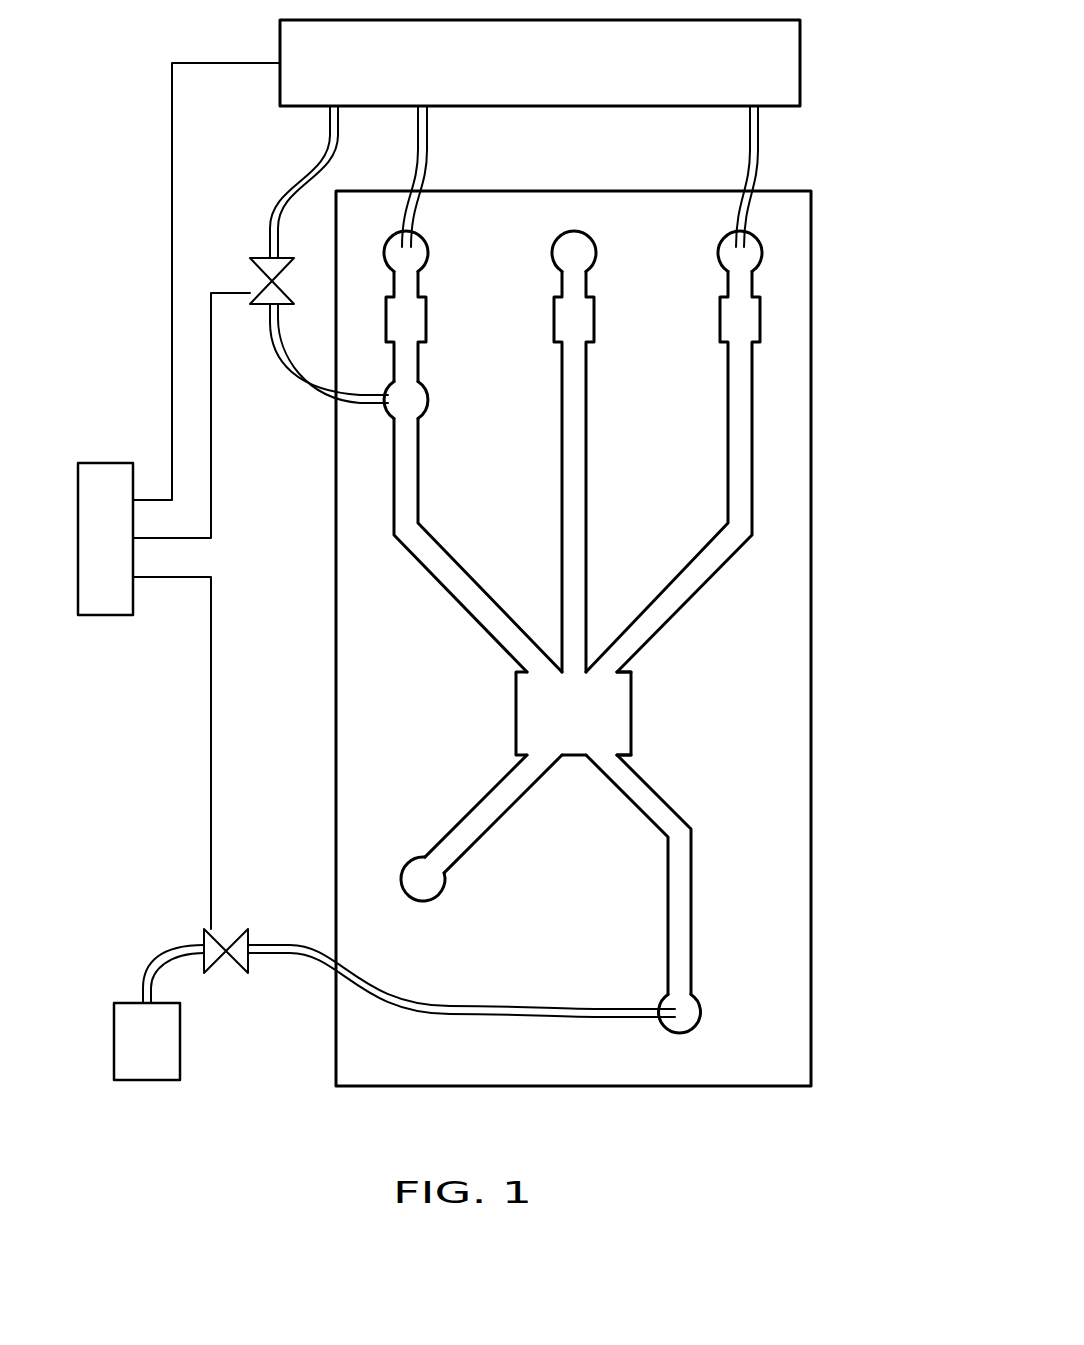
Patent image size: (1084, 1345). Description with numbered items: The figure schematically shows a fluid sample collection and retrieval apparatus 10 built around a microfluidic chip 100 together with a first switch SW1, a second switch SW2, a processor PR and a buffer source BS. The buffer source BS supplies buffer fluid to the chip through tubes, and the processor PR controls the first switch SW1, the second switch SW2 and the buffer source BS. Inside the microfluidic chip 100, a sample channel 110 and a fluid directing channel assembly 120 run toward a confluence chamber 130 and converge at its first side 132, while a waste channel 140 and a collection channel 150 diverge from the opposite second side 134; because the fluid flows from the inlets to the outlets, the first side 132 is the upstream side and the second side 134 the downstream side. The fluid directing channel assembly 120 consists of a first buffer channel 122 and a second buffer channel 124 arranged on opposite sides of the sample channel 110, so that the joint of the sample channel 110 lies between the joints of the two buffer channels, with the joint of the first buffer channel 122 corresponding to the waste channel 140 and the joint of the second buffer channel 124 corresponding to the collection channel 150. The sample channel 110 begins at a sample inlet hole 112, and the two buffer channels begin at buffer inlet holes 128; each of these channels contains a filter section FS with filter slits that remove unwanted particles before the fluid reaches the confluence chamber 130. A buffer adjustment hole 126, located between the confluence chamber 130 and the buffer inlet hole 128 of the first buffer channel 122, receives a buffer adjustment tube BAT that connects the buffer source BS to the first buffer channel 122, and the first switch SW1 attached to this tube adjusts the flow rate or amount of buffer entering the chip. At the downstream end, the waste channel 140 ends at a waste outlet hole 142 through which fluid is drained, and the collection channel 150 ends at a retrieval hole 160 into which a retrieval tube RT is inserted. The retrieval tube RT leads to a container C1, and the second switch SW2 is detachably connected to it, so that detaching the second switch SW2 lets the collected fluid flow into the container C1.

The fluid sample collection and retrieval apparatus 10 is at (869, 1135).
The microfluidic chip 100 is at (811, 1054).
The sample channel 110 is at (576, 560).
The sample inlet hole 112 is at (575, 235).
The fluid directing channel assembly 120 is at (870, 369).
The first buffer channel 122 is at (412, 505).
The second buffer channel 124 is at (745, 427).
The buffer adjustment hole 126 is at (437, 399).
The buffer inlet holes 128 is at (388, 240).
The confluence chamber 130 is at (632, 712).
The first side 132 is at (640, 672).
The second side 134 is at (640, 752).
The waste channel 140 is at (510, 798).
The waste outlet hole 142 is at (452, 886).
The collection channel 150 is at (681, 938).
The retrieval hole 160 is at (708, 1012).
The buffer source BS is at (800, 62).
The filter section FS is at (427, 318).
The first switch SW1 is at (251, 268).
The second switch SW2 is at (235, 974).
The buffer adjustment tube BAT is at (308, 388).
The processor PR is at (103, 616).
The container C1 is at (147, 1081).
The retrieval tube RT is at (395, 989).